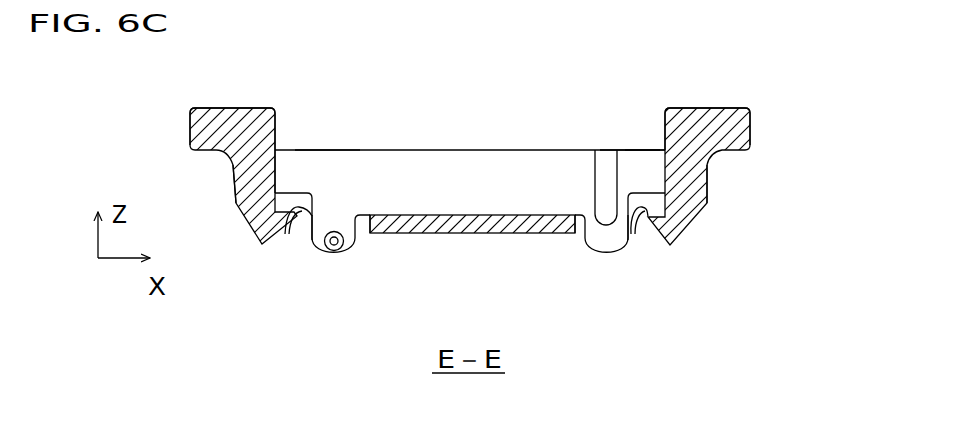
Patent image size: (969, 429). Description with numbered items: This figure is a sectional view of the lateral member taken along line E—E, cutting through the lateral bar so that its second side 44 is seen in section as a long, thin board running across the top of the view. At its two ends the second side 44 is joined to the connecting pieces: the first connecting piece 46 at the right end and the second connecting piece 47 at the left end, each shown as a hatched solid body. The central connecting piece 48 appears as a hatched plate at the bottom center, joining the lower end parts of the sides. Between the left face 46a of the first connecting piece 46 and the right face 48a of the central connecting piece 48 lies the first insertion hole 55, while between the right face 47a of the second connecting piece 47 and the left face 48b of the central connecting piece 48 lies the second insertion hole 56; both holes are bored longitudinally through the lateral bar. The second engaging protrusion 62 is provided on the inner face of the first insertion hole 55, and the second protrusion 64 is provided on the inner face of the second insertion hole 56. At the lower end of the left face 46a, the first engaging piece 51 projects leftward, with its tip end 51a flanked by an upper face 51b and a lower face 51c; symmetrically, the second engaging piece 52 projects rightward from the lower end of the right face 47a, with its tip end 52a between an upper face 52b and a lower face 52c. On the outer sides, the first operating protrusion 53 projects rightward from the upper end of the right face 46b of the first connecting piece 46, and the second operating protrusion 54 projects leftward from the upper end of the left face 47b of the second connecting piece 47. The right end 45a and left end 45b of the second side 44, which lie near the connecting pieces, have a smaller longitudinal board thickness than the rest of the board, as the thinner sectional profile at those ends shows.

The second side 44 is at (465, 165).
The right end of the second side 45a is at (641, 155).
The left end of the second side 45b is at (307, 155).
The first connecting piece 46 is at (705, 203).
The left face of the first connecting piece 46a is at (650, 158).
The right face of the first connecting piece 46b is at (710, 175).
The second connecting piece 47 is at (237, 203).
The right face of the second connecting piece 47a is at (287, 152).
The left face of the second connecting piece 47b is at (234, 175).
The central connecting piece 48 is at (470, 236).
The right face of the central connecting piece 48a is at (576, 235).
The left face of the central connecting piece 48b is at (365, 235).
The first engaging piece 51 is at (650, 233).
The tip end of the first engaging piece 51a is at (643, 232).
The upper face of the first engaging piece 51b is at (636, 226).
The lower face of the first engaging piece 51c is at (657, 240).
The second engaging piece 52 is at (290, 243).
The tip end of the second engaging piece 52a is at (292, 233).
The upper face of the second engaging piece 52b is at (309, 252).
The lower face of the second engaging piece 52c is at (287, 236).
The first operating protrusion 53 is at (750, 127).
The second operating protrusion 54 is at (220, 108).
The first insertion hole 55 is at (624, 155).
The second insertion hole 56 is at (340, 158).
The second engaging protrusion 62 is at (592, 172).
The second protrusion 64 is at (333, 250).